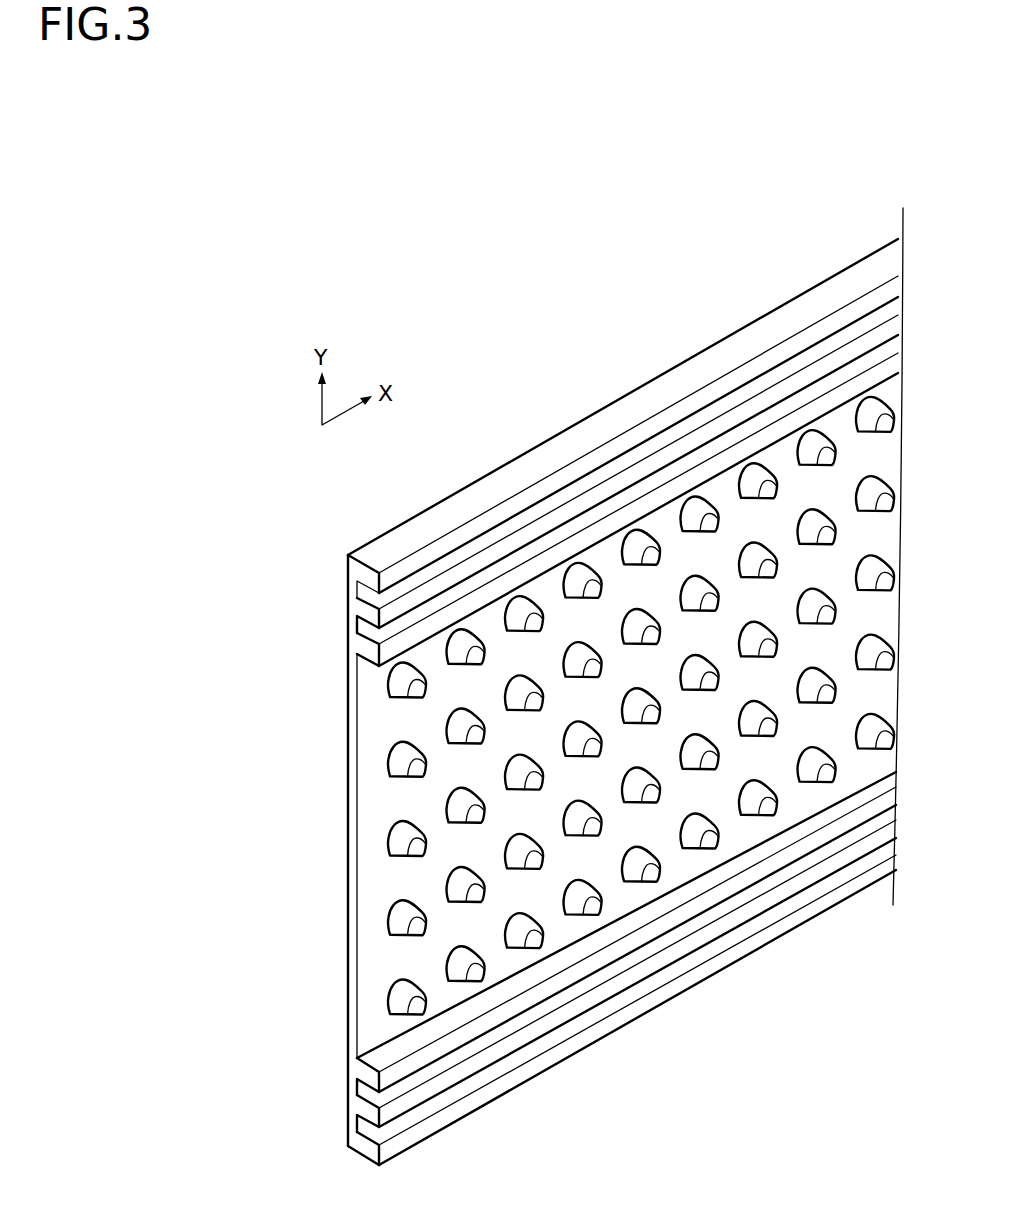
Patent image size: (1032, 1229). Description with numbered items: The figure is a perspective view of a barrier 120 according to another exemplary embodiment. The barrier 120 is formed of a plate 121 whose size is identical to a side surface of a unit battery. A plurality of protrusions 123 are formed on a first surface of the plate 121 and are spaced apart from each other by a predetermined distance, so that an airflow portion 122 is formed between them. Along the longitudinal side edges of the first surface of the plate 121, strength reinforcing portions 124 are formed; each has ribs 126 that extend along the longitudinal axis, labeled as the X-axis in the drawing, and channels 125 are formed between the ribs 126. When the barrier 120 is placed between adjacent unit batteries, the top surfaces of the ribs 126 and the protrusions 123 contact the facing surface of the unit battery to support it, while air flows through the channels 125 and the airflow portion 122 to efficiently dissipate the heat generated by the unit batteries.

The barrier 120 is at (236, 629).
The plate 121 is at (355, 826).
The airflow portion 122 is at (378, 879).
The protrusions 123 is at (392, 1000).
The strength reinforcing portions 124 is at (438, 504).
The channels 125 is at (355, 622).
The ribs 126 is at (366, 579).